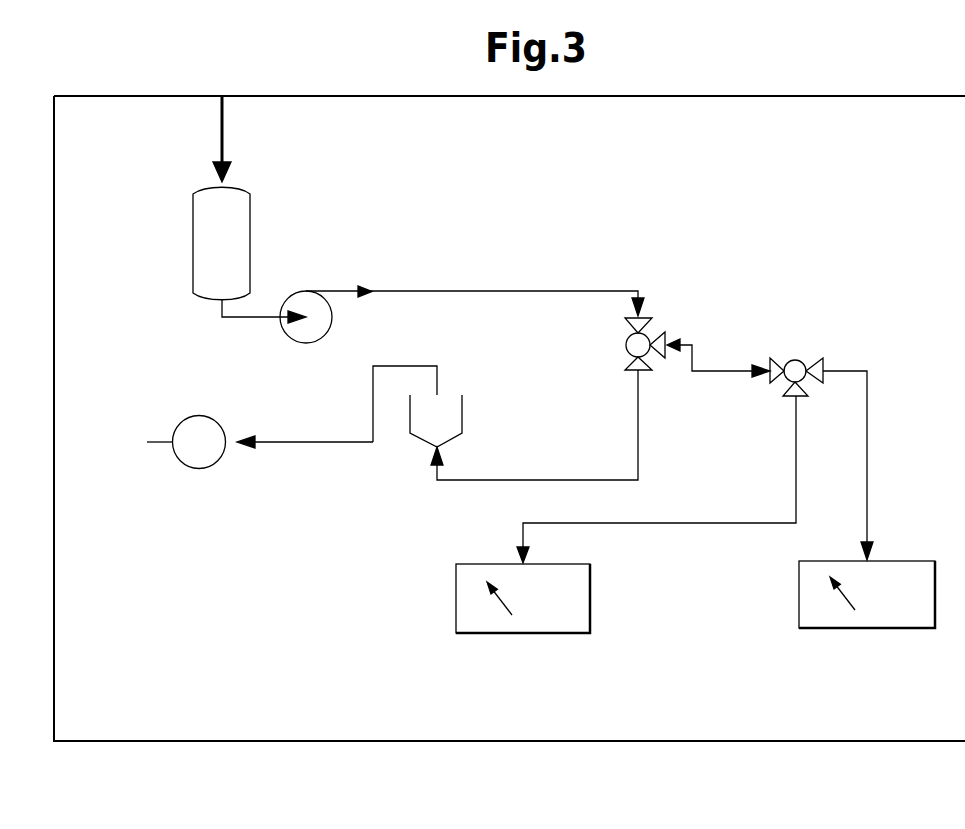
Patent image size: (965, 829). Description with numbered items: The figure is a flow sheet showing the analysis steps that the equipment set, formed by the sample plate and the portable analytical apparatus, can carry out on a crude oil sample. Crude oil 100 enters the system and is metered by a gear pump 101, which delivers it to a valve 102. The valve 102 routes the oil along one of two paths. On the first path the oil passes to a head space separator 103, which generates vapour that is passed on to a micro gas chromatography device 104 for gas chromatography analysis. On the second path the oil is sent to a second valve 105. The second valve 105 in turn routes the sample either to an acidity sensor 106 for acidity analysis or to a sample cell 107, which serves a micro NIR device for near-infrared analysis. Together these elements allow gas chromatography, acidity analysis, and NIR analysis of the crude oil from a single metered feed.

The crude oil 100 is at (193, 235).
The gear pump 101 is at (308, 343).
The valve 102 is at (626, 345).
The head space separator 103 is at (463, 407).
The micro gas chromatography device 104 is at (197, 468).
The second valve 105 is at (795, 358).
The acidity sensor 106 is at (507, 633).
The sample cell 107 is at (868, 628).